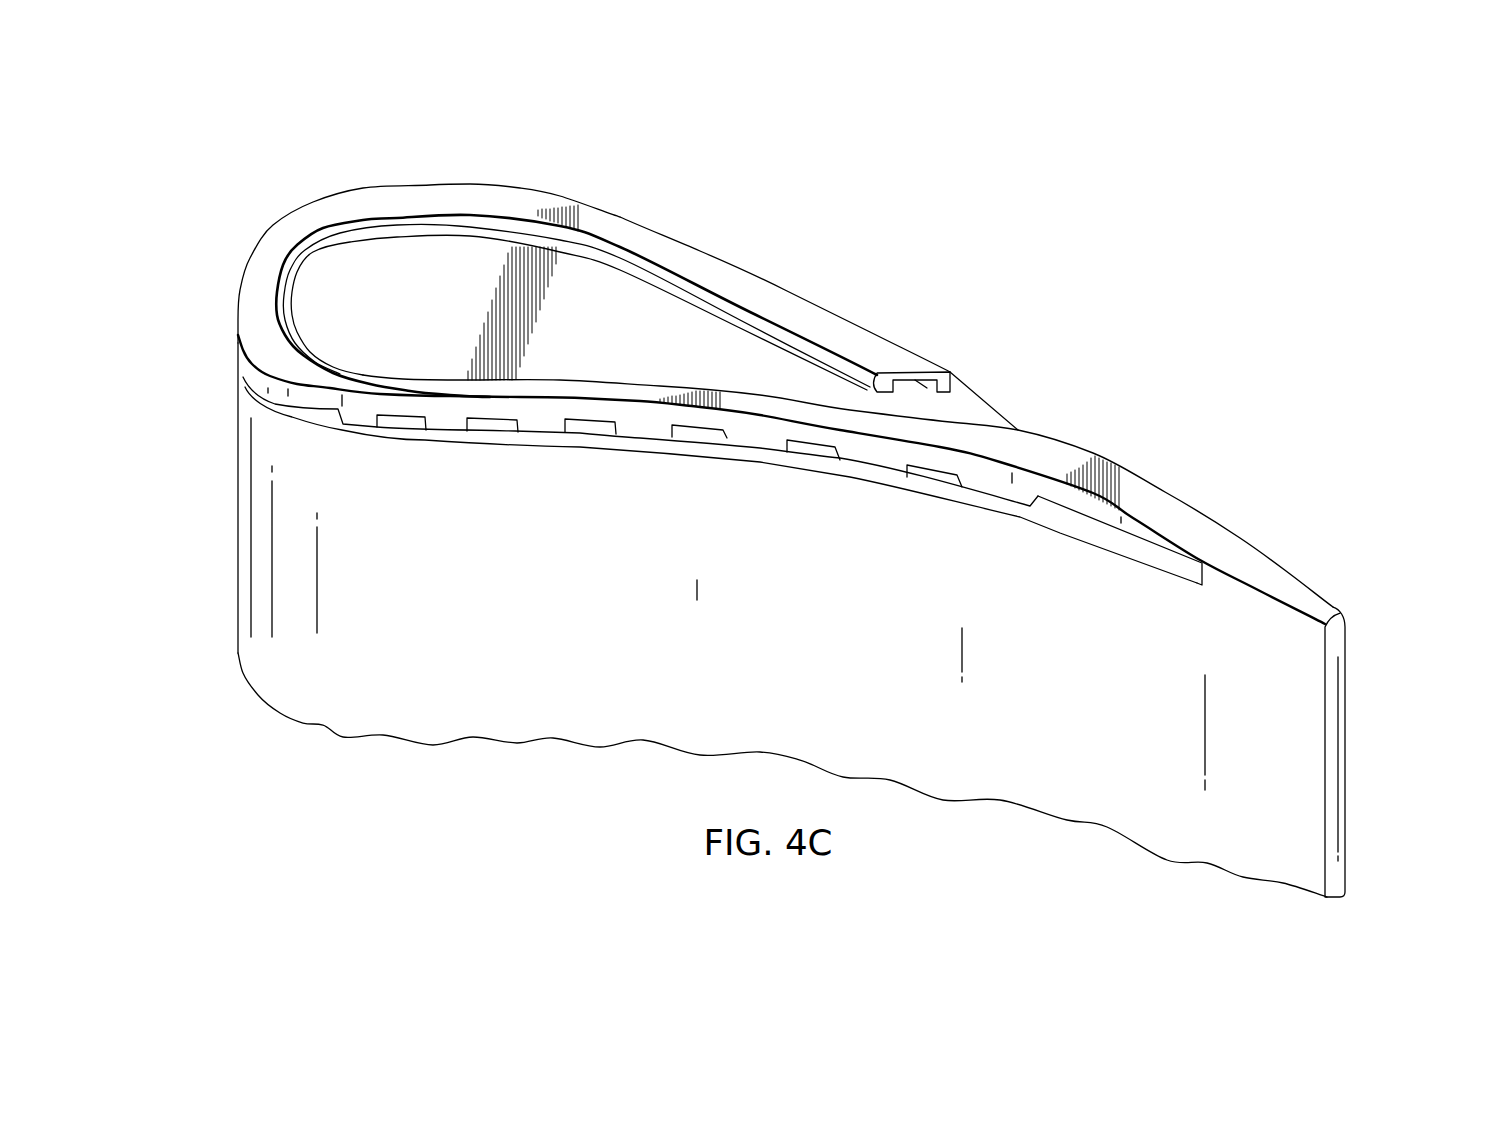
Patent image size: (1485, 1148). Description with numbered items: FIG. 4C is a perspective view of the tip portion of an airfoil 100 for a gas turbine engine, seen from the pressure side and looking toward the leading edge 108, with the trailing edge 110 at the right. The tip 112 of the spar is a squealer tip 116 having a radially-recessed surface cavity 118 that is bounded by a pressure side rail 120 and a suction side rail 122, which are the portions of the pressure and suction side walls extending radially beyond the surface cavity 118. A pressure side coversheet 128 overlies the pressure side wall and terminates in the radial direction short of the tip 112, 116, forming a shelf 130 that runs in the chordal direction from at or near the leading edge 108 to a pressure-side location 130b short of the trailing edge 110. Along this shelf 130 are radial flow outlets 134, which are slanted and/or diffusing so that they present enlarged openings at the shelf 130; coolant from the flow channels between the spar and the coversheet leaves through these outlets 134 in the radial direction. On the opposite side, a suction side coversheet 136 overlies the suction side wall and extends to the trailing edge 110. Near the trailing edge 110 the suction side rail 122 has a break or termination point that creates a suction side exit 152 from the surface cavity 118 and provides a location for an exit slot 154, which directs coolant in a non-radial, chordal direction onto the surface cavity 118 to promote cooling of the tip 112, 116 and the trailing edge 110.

The airfoil 100 is at (245, 151).
The leading edge 108 is at (207, 283).
The trailing edge 110 is at (1372, 627).
The tip 112 is at (429, 375).
The squealer tip 116 is at (429, 418).
The surface cavity 118 is at (683, 320).
The pressure side rail 120 is at (407, 388).
The suction side rail 122 is at (832, 327).
The pressure side coversheet 128 is at (305, 685).
The shelf 130 is at (397, 437).
The pressure-side location 130b is at (1194, 590).
The radial flow outlets 134 is at (540, 414).
The suction side coversheet 136 is at (1228, 527).
The suction side exit 152 is at (972, 410).
The exit slot 154 is at (908, 388).